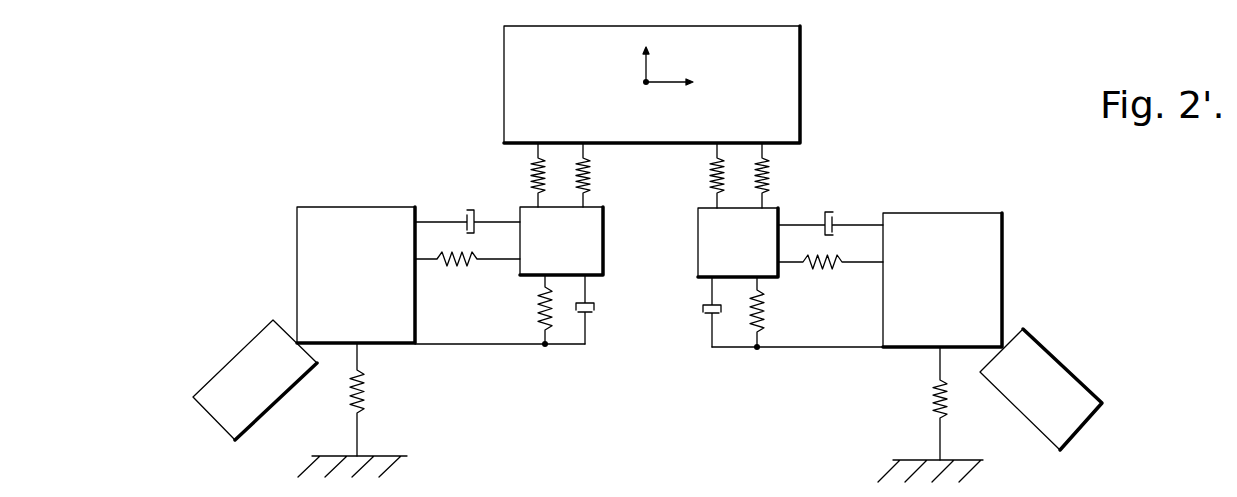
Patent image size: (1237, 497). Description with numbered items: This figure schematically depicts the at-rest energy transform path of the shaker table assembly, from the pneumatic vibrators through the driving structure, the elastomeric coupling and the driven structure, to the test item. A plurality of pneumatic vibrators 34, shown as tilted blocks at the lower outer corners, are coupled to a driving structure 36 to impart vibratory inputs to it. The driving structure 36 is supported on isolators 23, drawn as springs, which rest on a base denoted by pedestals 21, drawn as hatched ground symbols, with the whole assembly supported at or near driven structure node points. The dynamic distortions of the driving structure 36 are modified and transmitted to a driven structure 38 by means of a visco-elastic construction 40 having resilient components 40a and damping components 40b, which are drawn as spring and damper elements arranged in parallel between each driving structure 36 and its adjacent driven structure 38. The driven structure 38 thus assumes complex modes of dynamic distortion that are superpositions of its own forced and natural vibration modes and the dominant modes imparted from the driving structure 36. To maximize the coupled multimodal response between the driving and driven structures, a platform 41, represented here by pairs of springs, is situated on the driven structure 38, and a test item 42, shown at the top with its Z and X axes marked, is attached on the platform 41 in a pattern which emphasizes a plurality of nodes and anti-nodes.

The test item 42 is at (790, 72).
The platform 41 is at (590, 180).
The driven structure 38 is at (602, 209).
The driving structure 36 is at (298, 208).
The pneumatic vibrators 34 is at (227, 365).
The visco-elastic construction 40 is at (657, 255).
The resilient components 40a is at (462, 267).
The damping components 40b is at (478, 187).
The isolators 23 is at (362, 395).
The pedestals 21 is at (397, 463).